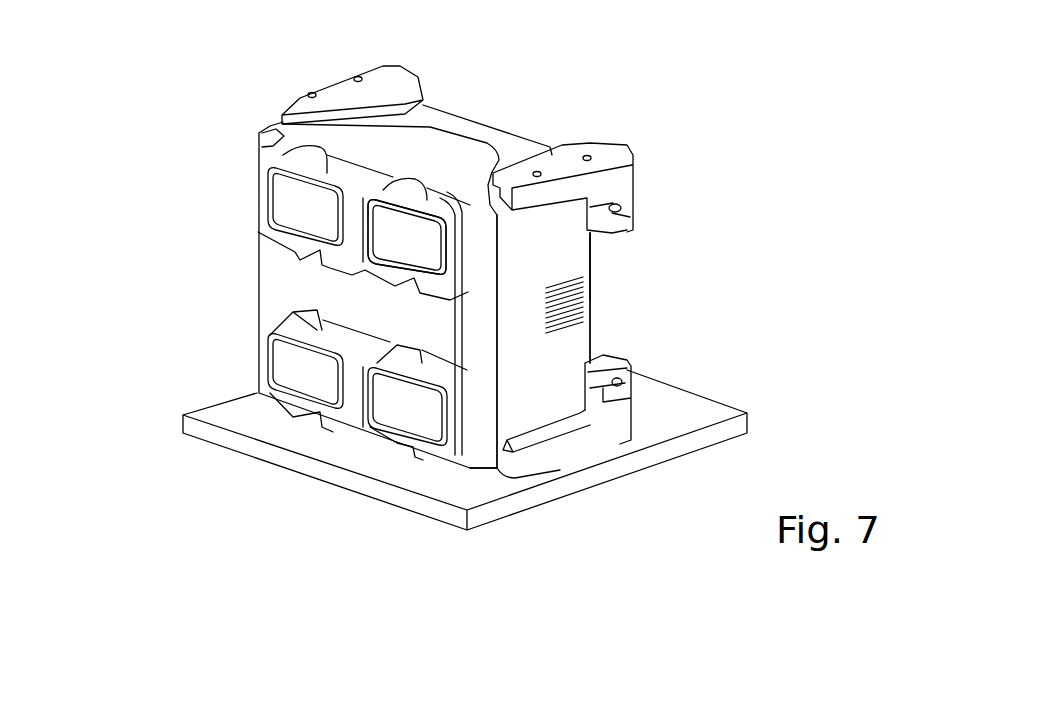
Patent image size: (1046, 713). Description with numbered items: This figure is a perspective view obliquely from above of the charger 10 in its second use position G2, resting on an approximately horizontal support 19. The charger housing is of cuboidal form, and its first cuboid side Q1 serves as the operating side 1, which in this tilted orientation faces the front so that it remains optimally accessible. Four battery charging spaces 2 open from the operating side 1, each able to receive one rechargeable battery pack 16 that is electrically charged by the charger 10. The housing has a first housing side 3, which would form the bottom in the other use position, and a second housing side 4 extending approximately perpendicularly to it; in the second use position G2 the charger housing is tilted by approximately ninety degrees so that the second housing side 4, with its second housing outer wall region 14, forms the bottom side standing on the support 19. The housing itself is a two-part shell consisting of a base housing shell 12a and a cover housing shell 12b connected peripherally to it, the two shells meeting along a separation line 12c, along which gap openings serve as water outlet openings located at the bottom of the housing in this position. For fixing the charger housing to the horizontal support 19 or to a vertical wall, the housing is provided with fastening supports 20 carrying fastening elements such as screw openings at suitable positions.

The operating side 1 is at (270, 287).
The battery charging space 2 is at (387, 222).
The first housing side 3 is at (593, 295).
The second housing side 4 is at (497, 530).
The second housing outer wall region 14 is at (490, 470).
The plug-in module 10 is at (333, 205).
The base housing shell 12a is at (563, 347).
The cover housing shell 12b is at (277, 133).
The separation line 12c is at (497, 365).
The rechargeable battery pack 16 is at (290, 205).
The horizontal support 19 is at (698, 442).
The fastening support 20 is at (330, 98).
The second use position G2 is at (593, 258).
The first cuboid side Q1 is at (267, 263).